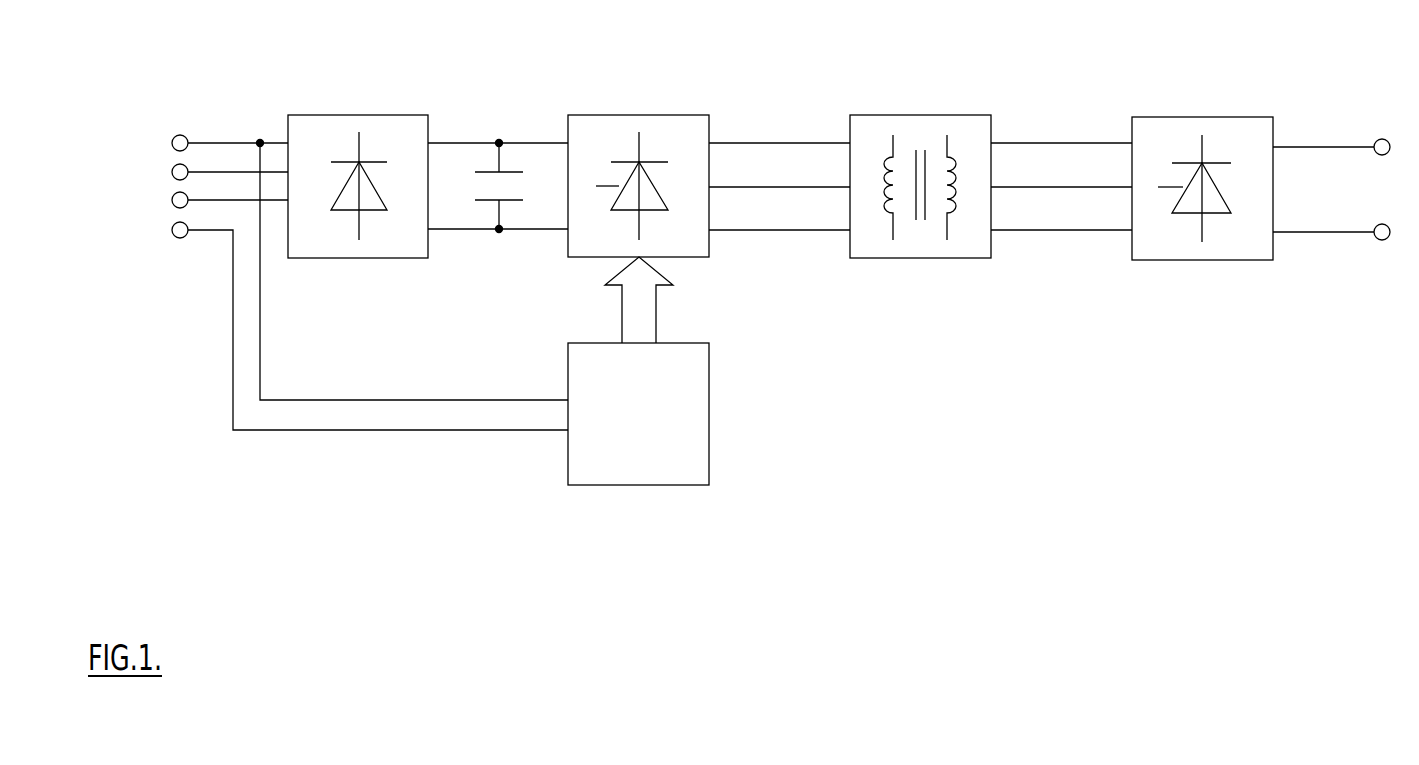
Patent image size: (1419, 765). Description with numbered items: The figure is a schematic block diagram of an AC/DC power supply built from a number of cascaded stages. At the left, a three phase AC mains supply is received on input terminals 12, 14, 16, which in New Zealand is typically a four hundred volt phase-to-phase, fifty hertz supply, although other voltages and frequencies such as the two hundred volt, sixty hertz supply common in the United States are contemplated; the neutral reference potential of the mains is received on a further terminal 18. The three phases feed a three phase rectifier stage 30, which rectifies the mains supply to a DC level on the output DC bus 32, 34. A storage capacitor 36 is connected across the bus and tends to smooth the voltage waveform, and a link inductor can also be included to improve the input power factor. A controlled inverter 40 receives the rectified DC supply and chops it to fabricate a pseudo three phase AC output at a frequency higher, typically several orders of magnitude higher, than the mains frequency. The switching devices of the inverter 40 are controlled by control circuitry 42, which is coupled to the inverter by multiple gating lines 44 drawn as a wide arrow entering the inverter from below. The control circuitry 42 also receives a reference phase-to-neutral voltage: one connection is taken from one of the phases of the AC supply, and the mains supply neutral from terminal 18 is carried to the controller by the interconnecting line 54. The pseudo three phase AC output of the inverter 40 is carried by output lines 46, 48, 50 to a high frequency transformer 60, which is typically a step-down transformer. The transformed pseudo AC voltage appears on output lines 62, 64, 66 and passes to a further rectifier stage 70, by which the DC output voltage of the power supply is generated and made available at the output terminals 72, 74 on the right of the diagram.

The input terminal 12 is at (173, 138).
The input terminal 14 is at (173, 167).
The input terminal 16 is at (173, 195).
The terminal 18 is at (173, 225).
The three phase rectifier stage 30 is at (305, 115).
The output DC bus 32 is at (455, 143).
The output DC bus 34 is at (452, 231).
The storage capacitor 36 is at (522, 186).
The controlled inverter 40 is at (585, 115).
The control circuitry 42 is at (700, 440).
The gating lines 44 is at (640, 313).
The output line 46 is at (725, 143).
The output line 48 is at (788, 143).
The output line 50 is at (752, 232).
The interconnecting line 54 is at (345, 432).
The high frequency transformer 60 is at (868, 115).
The output line 62 is at (1008, 143).
The output line 64 is at (1068, 143).
The output line 66 is at (1033, 232).
The further rectifier stage 70 is at (1147, 117).
The output terminal 72 is at (1383, 139).
The output terminal 74 is at (1383, 224).